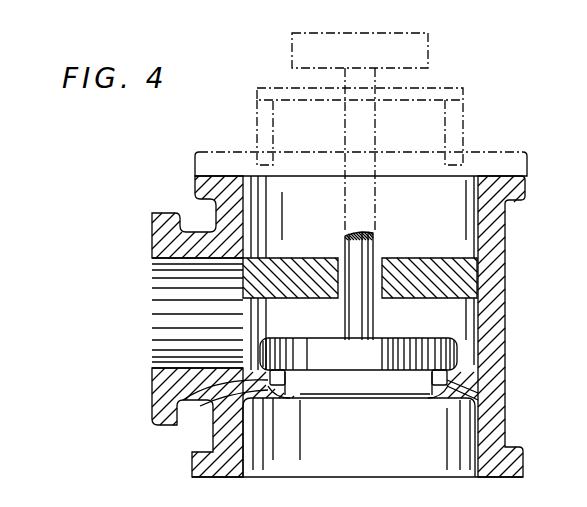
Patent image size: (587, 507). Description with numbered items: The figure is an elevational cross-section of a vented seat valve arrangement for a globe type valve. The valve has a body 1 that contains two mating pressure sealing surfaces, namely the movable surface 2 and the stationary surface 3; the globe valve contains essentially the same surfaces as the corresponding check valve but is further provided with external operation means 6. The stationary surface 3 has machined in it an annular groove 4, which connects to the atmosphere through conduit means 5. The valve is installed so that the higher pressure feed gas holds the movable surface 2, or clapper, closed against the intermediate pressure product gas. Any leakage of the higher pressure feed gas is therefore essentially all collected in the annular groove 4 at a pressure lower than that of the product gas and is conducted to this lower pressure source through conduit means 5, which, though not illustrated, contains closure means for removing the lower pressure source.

The body 1 is at (195, 190).
The movable surface 2 is at (446, 352).
The stationary surface 3 is at (430, 380).
The annular groove 4 is at (430, 392).
The conduit means 5 is at (205, 432).
The external operation means 6 is at (428, 58).